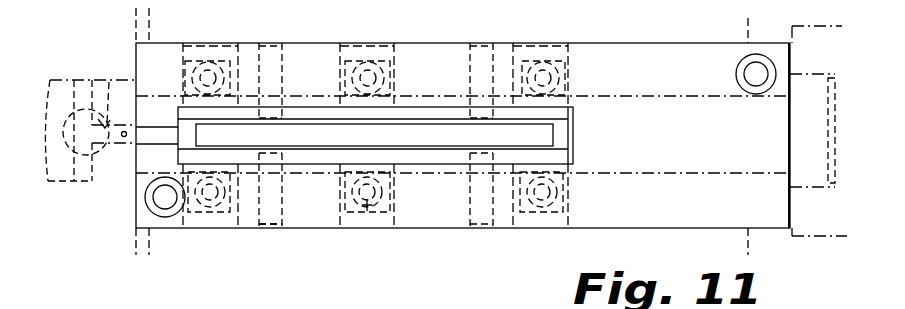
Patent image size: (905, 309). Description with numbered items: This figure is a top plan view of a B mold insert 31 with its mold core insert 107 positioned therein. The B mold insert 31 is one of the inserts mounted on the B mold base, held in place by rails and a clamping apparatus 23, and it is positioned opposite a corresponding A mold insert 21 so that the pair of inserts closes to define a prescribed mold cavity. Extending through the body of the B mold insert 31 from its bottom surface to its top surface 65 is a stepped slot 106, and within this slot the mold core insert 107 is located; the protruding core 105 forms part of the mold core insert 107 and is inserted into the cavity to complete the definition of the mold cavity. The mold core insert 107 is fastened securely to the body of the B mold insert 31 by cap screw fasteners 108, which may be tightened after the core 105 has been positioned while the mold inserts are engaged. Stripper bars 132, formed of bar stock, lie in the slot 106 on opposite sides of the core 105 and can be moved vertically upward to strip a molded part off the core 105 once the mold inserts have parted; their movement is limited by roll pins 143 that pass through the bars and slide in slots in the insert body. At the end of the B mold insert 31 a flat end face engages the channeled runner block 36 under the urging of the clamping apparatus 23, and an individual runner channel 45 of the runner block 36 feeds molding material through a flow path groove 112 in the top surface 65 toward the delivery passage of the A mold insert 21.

The A mold insert 21 is at (196, 158).
The clamping apparatus 23 is at (838, 247).
The B mold insert 31 is at (600, 229).
The channeled runner block 36 is at (60, 182).
The individual runner channel 45 is at (109, 82).
The top surface of the B mold insert 65 is at (152, 165).
The core 105 is at (547, 133).
The stepped slot 106 is at (655, 110).
The mold core insert 107 is at (565, 141).
The cap screw fasteners 108 is at (366, 211).
The flow path groove 112 is at (150, 140).
The stripper bars 132 is at (311, 156).
The roll pins 143 is at (274, 230).